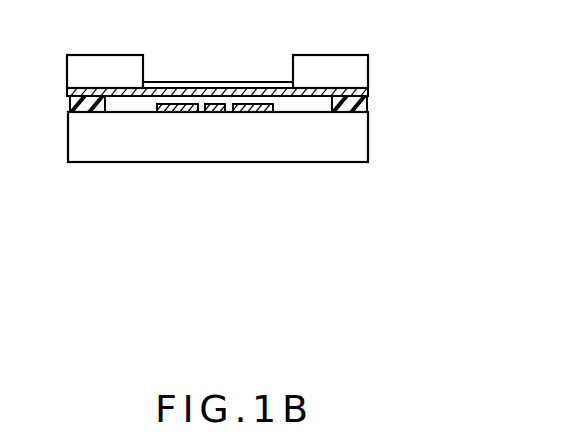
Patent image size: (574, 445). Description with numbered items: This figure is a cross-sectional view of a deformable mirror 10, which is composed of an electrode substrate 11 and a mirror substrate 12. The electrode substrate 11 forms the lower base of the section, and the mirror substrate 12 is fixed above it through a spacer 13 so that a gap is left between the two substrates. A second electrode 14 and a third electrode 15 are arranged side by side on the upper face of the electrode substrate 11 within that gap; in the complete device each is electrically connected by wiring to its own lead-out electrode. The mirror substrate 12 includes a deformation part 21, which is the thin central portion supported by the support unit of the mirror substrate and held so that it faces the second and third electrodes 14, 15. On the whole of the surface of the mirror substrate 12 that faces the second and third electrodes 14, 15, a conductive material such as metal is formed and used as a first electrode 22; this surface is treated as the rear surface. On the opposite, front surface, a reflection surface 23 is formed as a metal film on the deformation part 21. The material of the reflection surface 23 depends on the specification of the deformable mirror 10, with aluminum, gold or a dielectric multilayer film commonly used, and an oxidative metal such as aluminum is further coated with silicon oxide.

The deformable mirror 10 is at (287, 192).
The electrode substrate 11 is at (100, 150).
The mirror substrate 12 is at (106, 62).
The spacer 13 is at (70, 100).
The second electrode 14 is at (172, 112).
The third electrode 15 is at (216, 112).
The deformation part 21 is at (224, 80).
The first electrode 22 is at (186, 88).
The reflection surface 23 is at (262, 83).